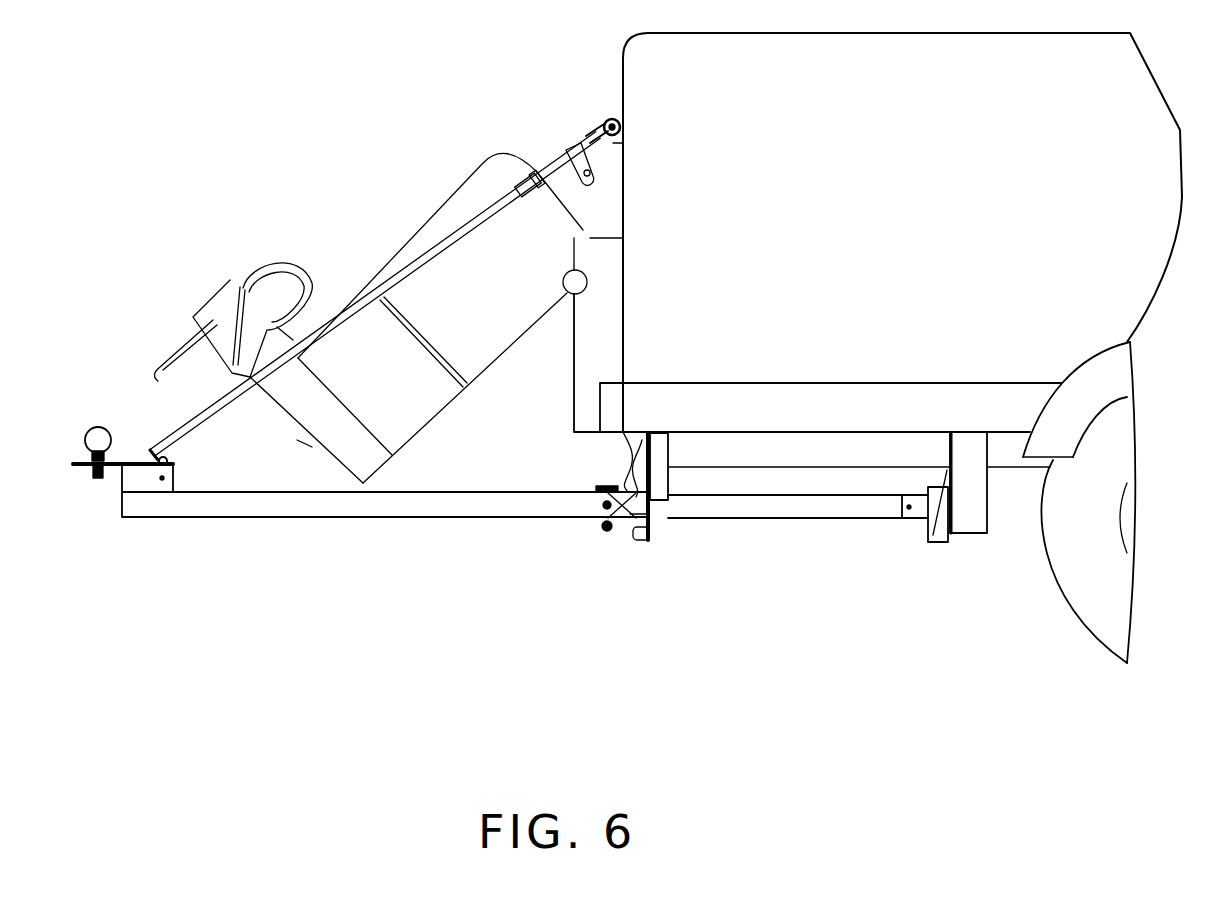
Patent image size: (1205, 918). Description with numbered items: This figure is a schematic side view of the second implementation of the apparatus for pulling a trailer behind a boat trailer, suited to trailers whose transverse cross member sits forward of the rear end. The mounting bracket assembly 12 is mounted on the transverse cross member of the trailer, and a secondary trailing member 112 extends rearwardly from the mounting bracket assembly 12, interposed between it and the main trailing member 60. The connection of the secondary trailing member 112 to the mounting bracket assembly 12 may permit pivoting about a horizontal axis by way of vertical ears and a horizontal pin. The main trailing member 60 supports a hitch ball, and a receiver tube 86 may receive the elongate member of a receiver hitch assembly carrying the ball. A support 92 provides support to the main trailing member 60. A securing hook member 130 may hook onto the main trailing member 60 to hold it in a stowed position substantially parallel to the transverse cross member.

The mounting bracket assembly 12 is at (927, 535).
The main trailing member 60 is at (368, 505).
The receiver tube 86 is at (133, 480).
The support 92 is at (405, 265).
The secondary trailing member 112 is at (735, 508).
The securing hook member 130 is at (625, 520).